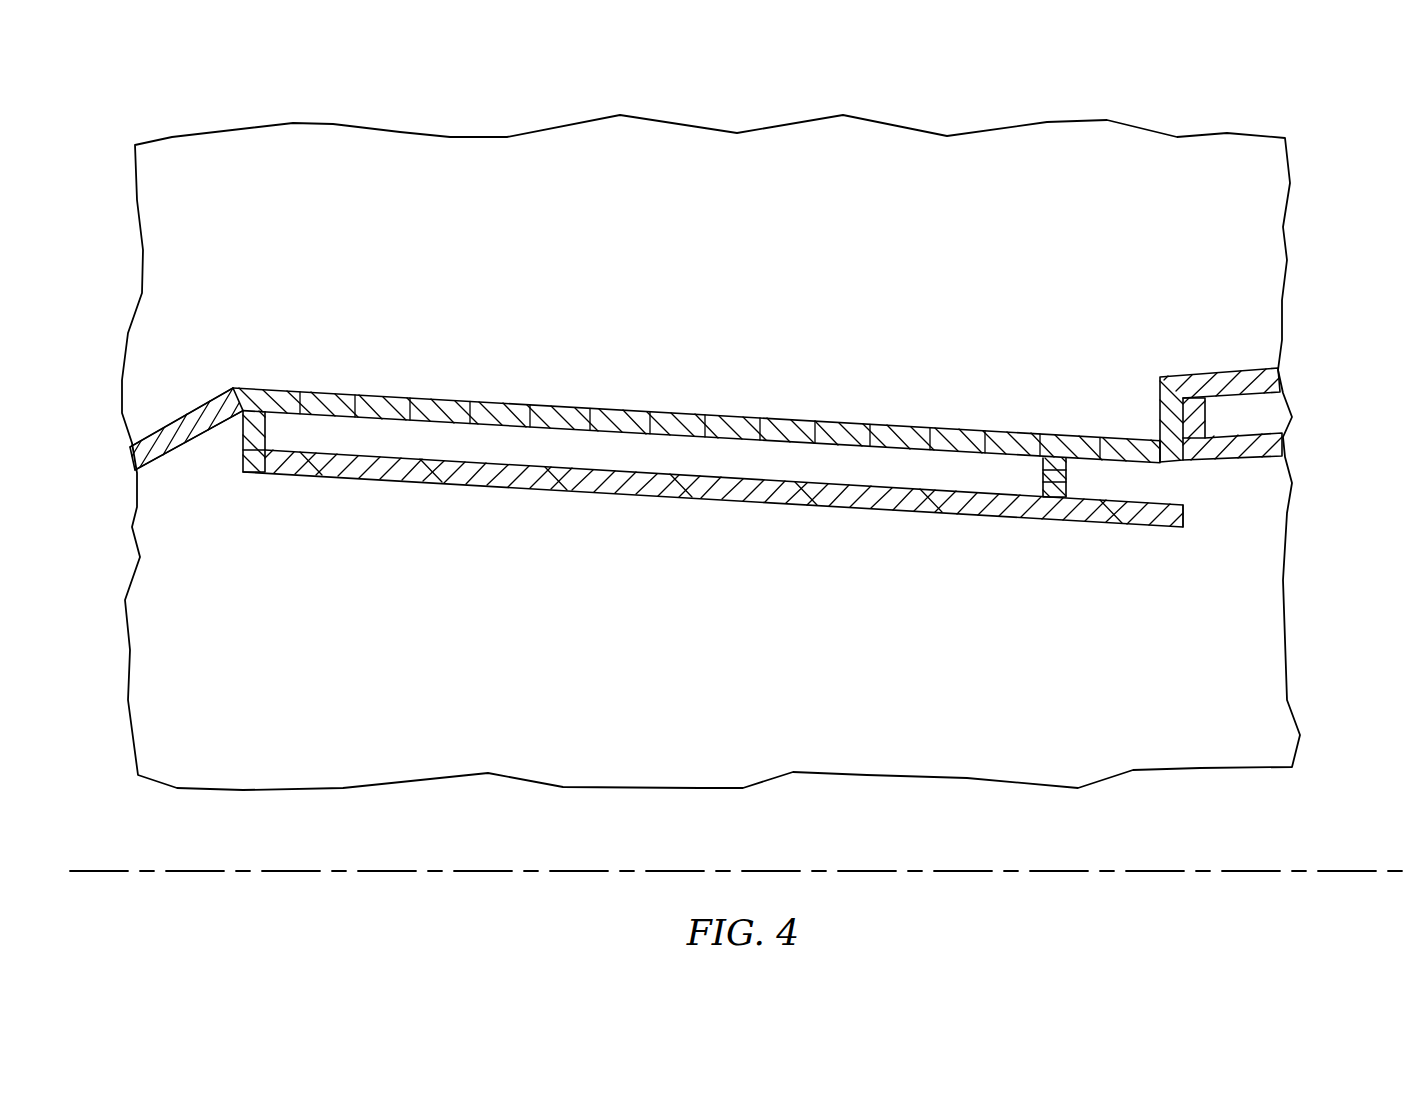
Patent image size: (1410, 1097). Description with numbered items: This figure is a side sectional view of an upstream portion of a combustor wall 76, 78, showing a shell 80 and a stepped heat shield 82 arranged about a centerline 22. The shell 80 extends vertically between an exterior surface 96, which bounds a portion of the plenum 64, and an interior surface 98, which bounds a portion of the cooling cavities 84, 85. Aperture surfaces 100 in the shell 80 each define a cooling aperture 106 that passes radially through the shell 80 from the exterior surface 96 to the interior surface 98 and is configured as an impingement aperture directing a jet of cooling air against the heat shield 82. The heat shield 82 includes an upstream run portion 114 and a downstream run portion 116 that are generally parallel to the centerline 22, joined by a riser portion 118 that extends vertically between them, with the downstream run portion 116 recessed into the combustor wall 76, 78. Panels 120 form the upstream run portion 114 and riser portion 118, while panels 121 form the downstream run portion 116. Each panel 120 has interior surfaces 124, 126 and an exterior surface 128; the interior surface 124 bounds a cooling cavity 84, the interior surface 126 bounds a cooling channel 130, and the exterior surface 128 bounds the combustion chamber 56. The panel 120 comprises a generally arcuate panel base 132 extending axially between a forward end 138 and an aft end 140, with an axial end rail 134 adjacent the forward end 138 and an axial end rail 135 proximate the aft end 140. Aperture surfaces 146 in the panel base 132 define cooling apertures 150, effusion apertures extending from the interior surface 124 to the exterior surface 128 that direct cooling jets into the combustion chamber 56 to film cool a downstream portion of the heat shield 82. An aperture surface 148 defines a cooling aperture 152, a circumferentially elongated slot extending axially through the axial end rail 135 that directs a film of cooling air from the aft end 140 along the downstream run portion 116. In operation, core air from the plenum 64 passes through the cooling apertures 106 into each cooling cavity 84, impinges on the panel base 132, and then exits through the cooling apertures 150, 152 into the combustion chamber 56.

The centerline 22 is at (1390, 863).
The combustion chamber 56 is at (745, 750).
The plenum 64 is at (738, 193).
The combustor wall 76 is at (1286, 93).
The combustor wall 78 is at (1317, 82).
The shell 80 is at (205, 400).
The heat shield 82 is at (698, 537).
The cooling cavity 84 is at (488, 442).
The cooling cavity 85 is at (1262, 412).
The exterior surface 96 is at (152, 433).
The interior surface 98 is at (155, 477).
The aperture surface 100 is at (343, 397).
The cooling aperture 106 is at (353, 395).
The upstream run portion 114 is at (876, 539).
The downstream run portion 116 is at (1252, 472).
The riser portion 118 is at (1208, 495).
The panel 120 is at (462, 488).
The panel 121 is at (1285, 443).
The interior surface 124 is at (980, 487).
The interior surface 126 is at (1125, 492).
The exterior surface 128 is at (1042, 518).
The cooling channel 130 is at (1092, 473).
The panel base 132 is at (582, 493).
The axial end rail 134 is at (253, 442).
The axial end rail 135 is at (1052, 460).
The forward end 138 is at (242, 432).
The aft end 140 is at (1185, 515).
The aperture surface 146 is at (332, 458).
The aperture surface 148 is at (1065, 500).
The cooling aperture 150 is at (262, 390).
The cooling aperture 152 is at (1035, 460).